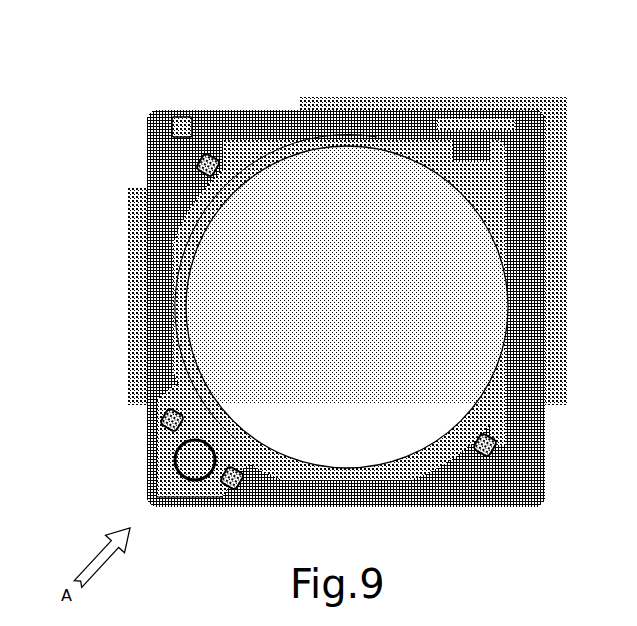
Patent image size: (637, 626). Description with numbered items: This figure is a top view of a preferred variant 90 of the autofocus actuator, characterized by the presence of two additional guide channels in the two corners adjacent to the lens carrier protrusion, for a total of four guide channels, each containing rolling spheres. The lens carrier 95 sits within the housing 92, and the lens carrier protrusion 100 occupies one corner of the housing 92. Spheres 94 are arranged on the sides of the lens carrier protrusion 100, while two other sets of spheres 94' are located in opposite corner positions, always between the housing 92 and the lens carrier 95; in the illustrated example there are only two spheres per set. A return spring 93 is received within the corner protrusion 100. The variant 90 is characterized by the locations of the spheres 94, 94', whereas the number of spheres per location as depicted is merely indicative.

The variant 90 is at (81, 141).
The housing 92 is at (267, 109).
The return spring 93 is at (203, 507).
The spheres 94 is at (296, 349).
The spheres 94' is at (344, 315).
The lens carrier 95 is at (363, 109).
The lens carrier protrusion 100 is at (157, 479).